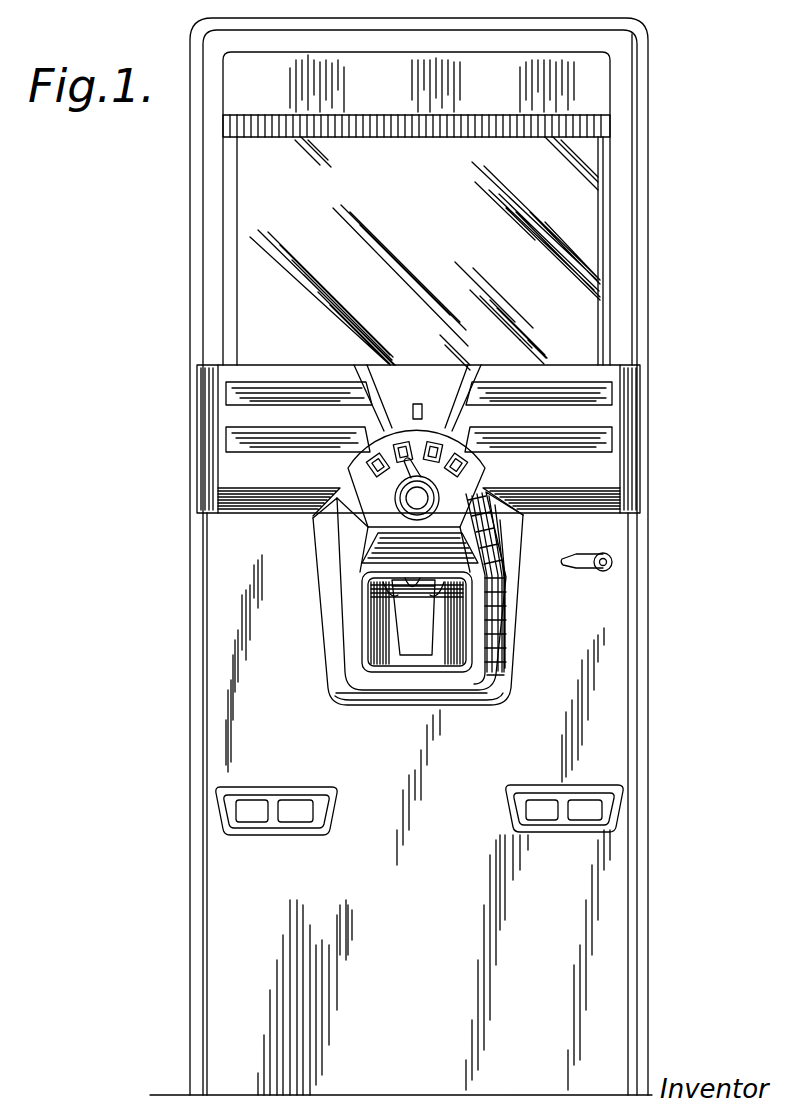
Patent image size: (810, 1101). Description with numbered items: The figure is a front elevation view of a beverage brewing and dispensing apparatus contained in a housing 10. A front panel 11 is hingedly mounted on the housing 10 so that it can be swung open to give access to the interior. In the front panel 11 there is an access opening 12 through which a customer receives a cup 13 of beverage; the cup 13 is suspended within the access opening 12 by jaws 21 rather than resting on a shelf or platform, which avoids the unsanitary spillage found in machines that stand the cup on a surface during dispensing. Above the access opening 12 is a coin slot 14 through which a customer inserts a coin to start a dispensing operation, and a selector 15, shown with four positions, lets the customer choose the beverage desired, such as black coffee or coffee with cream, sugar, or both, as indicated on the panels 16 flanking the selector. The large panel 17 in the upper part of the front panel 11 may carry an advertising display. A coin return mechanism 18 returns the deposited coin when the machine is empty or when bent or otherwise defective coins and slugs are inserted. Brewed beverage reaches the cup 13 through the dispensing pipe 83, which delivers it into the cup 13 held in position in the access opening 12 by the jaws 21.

The housing 10 is at (648, 174).
The front panel 11 is at (418, 825).
The access opening 12 is at (468, 640).
The cup 13 is at (413, 616).
The coin slot 14 is at (424, 414).
The selector 15 is at (397, 486).
The panels 16 is at (290, 438).
The large panel 17 is at (416, 211).
The coin return mechanism 18 is at (598, 573).
The jaws 21 is at (367, 590).
The dispensing pipe 83 is at (436, 586).